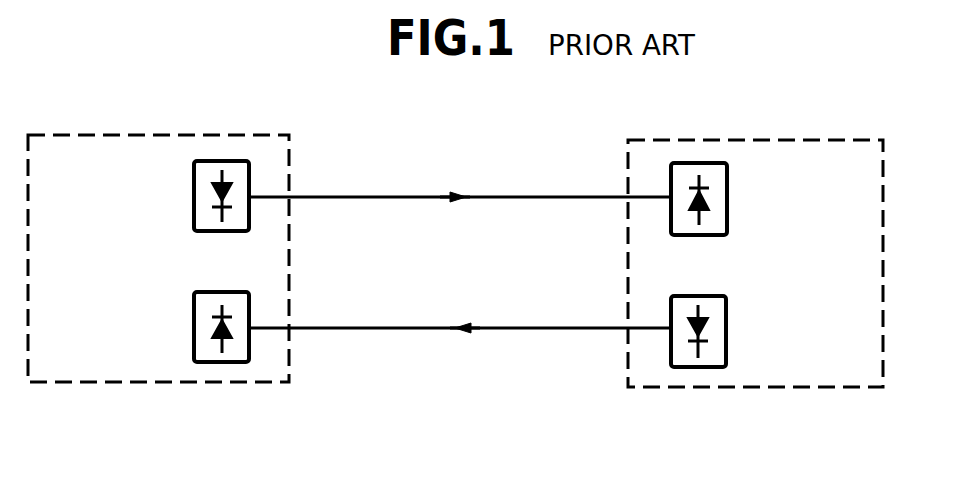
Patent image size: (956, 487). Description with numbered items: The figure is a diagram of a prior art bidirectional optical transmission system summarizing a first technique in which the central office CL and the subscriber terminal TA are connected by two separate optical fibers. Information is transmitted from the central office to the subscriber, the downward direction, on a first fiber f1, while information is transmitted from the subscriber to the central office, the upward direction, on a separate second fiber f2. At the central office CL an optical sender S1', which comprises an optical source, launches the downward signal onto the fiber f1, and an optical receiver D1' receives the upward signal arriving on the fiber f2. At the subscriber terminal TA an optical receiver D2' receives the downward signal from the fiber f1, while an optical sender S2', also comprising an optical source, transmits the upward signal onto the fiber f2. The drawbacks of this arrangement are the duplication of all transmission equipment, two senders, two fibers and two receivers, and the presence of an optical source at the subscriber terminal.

The central office CL is at (166, 135).
The subscriber terminal TA is at (772, 140).
The optical sender S1' is at (192, 208).
The optical receiver D1' is at (186, 314).
The optical receiver D2' is at (727, 211).
The optical sender S2' is at (724, 320).
The optical fiber f1 is at (540, 196).
The optical fiber f2 is at (538, 330).